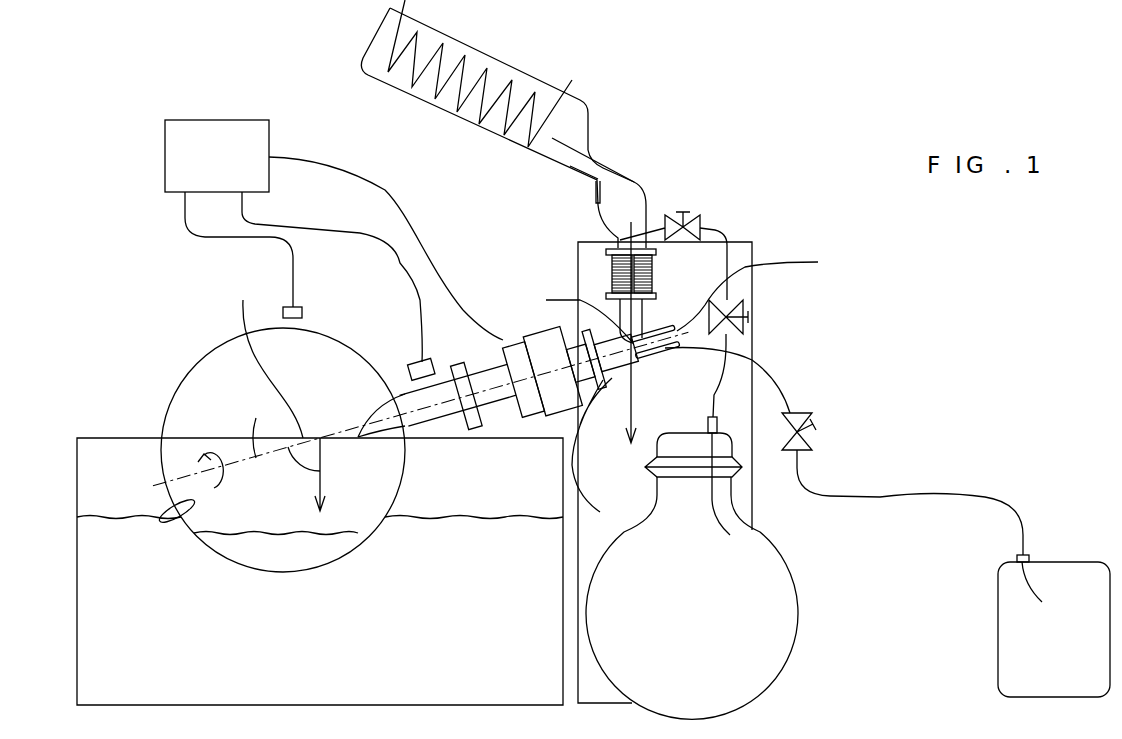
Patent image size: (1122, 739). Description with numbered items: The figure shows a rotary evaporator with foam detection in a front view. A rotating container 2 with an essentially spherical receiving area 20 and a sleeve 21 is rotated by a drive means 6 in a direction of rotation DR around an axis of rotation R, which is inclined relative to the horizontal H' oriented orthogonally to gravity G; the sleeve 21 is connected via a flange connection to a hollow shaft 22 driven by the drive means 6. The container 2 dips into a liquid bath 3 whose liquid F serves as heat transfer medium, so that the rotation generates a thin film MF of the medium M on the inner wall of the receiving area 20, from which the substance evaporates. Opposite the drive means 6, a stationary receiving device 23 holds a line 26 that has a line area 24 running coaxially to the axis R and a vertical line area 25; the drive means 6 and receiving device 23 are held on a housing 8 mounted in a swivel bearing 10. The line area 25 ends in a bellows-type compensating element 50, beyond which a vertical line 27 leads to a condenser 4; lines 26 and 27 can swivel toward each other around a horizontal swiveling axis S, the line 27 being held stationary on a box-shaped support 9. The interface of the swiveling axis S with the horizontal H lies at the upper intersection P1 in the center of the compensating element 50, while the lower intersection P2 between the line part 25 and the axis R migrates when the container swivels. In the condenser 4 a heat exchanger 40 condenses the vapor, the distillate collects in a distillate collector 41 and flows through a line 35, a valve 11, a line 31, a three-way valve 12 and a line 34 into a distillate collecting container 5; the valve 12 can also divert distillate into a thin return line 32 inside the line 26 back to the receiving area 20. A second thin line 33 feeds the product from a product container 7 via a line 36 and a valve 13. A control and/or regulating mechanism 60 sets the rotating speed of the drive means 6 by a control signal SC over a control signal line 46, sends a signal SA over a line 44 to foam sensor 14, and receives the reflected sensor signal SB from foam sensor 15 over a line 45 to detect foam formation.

The rotating container 2 is at (198, 362).
The liquid bath 3 is at (118, 438).
The condenser 4 is at (515, 70).
The distillate collecting container 5 is at (775, 552).
The drive means 6 is at (533, 331).
The product container 7 is at (998, 585).
The housing 8 is at (550, 438).
The support 9 is at (738, 496).
The swivel bearing 10 is at (596, 250).
The valve 11 is at (687, 212).
The valve 12 is at (755, 314).
The valve 13 is at (810, 425).
The foam sensor 14 is at (409, 364).
The foam sensor 15 is at (308, 307).
The receiving area 20 is at (243, 574).
The sleeve 21 is at (450, 440).
The hollow shaft 22 is at (466, 366).
The receiving device 23 is at (601, 452).
The line area 24 is at (598, 378).
The line area 25 is at (643, 316).
The line 26 is at (640, 372).
The line 27 is at (590, 245).
The line 31 is at (653, 265).
The line 32 is at (763, 290).
The line 33 is at (775, 382).
The line 34 is at (716, 375).
The line 35 is at (633, 195).
The line 36 is at (935, 492).
The heat exchanger 40 is at (422, 78).
The distillate collector 41 is at (568, 174).
The sensor signal line 44 is at (241, 213).
The sensor signal line 45 is at (184, 228).
The control signal line 46 is at (330, 158).
The compensating element 50 is at (612, 280).
The control and/or regulating mechanism 60 is at (212, 118).
The sensor signal SA is at (326, 233).
The sensor signal SB is at (217, 244).
The control signal SC is at (387, 190).
The upper intersection P1 is at (718, 232).
The lower intersection P2 is at (567, 354).
The horizontal H is at (652, 296).
The swiveling axis S is at (610, 272).
The axis of rotation R is at (269, 355).
The gravity G is at (325, 483).
The direction of rotation DR is at (192, 475).
The film MF is at (162, 520).
The liquid F is at (459, 588).
The medium M is at (318, 562).
The horizontal H' is at (206, 415).